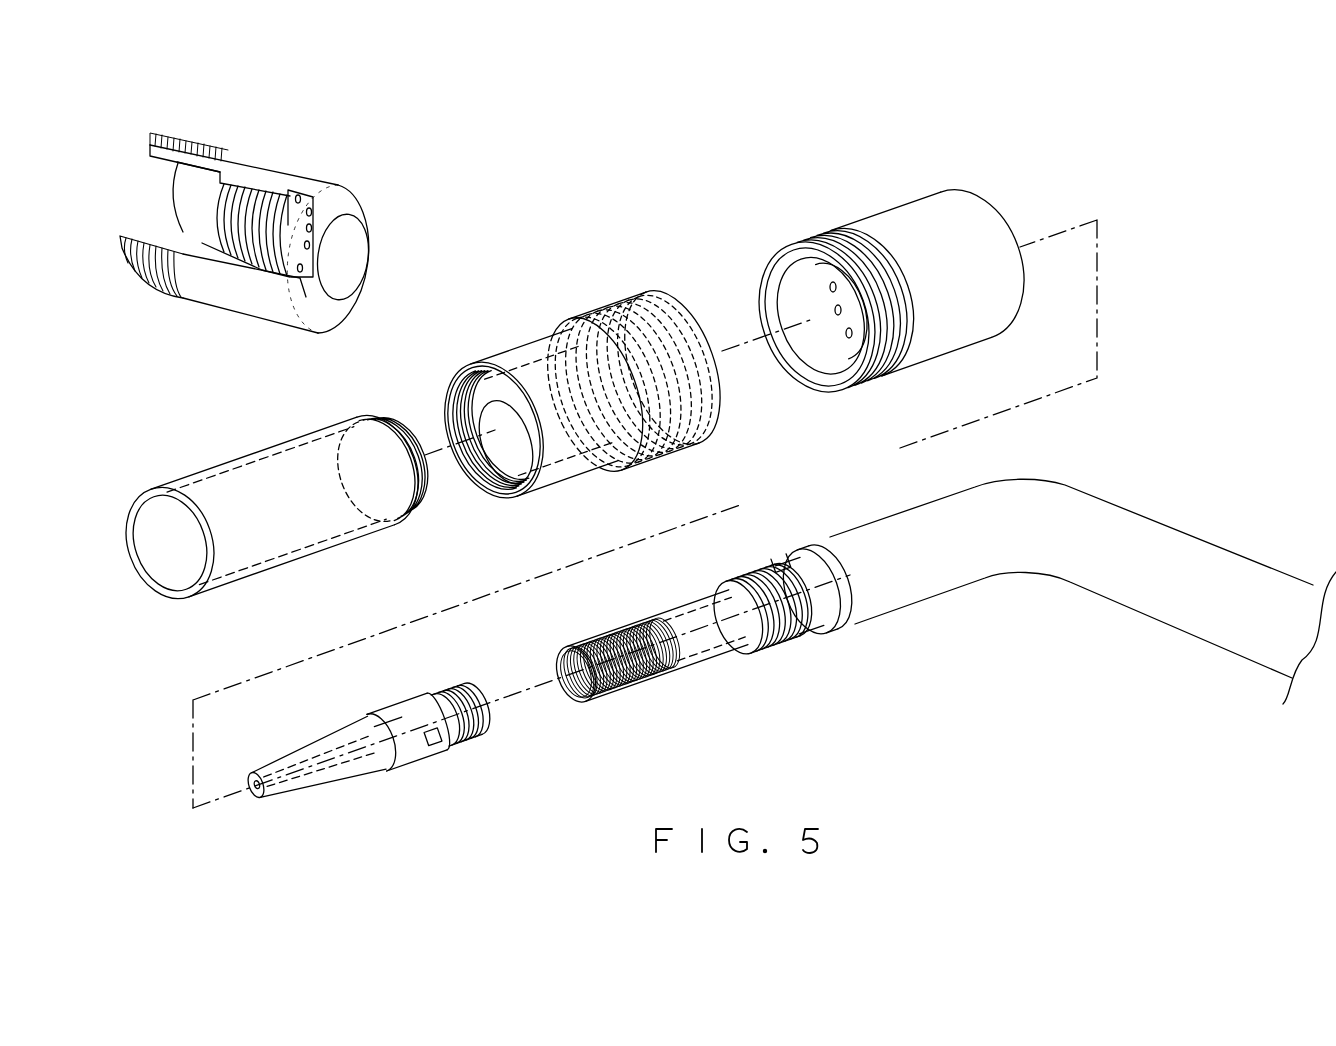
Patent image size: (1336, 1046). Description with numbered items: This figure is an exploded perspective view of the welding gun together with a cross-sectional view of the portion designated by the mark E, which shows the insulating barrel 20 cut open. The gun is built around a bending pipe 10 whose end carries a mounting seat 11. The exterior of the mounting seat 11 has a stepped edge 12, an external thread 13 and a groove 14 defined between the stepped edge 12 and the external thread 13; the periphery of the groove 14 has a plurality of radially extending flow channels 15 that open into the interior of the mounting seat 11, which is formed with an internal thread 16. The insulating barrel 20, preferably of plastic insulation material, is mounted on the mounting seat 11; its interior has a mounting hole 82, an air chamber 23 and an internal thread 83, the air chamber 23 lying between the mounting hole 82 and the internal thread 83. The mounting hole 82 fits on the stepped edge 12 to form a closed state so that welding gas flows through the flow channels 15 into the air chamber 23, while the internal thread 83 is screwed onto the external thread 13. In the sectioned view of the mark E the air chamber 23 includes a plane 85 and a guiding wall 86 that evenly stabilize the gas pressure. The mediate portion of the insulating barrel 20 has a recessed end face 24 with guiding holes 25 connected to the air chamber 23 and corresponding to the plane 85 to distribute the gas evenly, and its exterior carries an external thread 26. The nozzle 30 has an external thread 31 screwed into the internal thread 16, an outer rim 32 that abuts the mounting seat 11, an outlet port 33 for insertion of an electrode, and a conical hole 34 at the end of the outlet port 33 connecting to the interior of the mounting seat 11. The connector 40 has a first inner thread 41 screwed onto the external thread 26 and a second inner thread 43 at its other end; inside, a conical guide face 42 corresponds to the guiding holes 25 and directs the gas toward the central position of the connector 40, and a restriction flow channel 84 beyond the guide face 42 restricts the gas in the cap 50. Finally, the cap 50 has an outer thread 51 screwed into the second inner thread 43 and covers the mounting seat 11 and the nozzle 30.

The bending pipe 10 is at (1062, 504).
The mounting seat 11 is at (703, 660).
The stepped edge 12 is at (853, 607).
The external thread 13 is at (770, 643).
The groove 14 is at (817, 620).
The flow channels 15 is at (797, 562).
The internal thread 16 is at (567, 667).
The insulating barrel 20 is at (281, 162).
The air chamber 23 is at (322, 243).
The recessed end face 24 is at (840, 330).
The guiding holes 25 is at (837, 310).
The external thread 26 is at (150, 273).
The nozzle 30 is at (337, 780).
The external thread 31 is at (463, 733).
The outer rim 32 is at (457, 700).
The outlet port 33 is at (257, 788).
The conical hole 34 is at (484, 715).
The connector 40 is at (548, 333).
The first inner thread 41 is at (655, 302).
The conical guide face 42 is at (653, 433).
The second inner thread 43 is at (486, 455).
The cap 50 is at (236, 464).
The outer thread 51 is at (374, 418).
The mounting hole 82 is at (338, 263).
The internal thread 83 is at (241, 248).
The restriction flow channel 84 is at (505, 403).
The plane 85 is at (311, 213).
The guiding wall 86 is at (300, 200).
The mark E is at (251, 394).